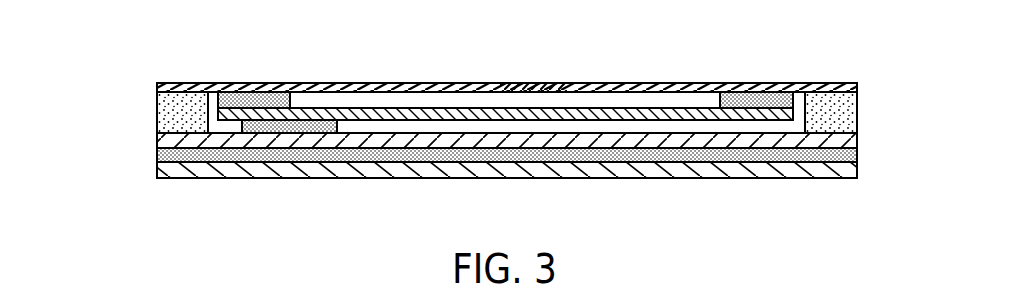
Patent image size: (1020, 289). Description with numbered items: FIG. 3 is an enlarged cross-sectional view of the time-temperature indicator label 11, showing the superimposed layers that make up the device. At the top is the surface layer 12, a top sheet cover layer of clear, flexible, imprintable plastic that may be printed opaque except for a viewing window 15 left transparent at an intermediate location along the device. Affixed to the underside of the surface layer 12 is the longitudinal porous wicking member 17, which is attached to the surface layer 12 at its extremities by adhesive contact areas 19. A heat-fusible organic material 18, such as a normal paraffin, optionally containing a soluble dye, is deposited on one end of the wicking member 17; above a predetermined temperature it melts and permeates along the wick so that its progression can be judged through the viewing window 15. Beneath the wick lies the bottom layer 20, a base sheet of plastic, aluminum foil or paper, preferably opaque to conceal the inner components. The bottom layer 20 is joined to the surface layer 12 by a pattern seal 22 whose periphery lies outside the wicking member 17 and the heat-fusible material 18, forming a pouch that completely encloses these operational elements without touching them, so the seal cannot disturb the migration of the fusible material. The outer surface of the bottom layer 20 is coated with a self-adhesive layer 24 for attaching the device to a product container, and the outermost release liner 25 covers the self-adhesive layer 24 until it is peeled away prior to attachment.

The label 11 is at (130, 132).
The surface layer 12 is at (663, 85).
The viewing window 15 is at (537, 83).
The wicking member 17 is at (412, 117).
The heat-fusible material 18 is at (290, 124).
The adhesive contact areas 19 is at (264, 98).
The bottom layer 20 is at (638, 138).
The pattern seal 22 is at (158, 103).
The self-adhesive layer 24 is at (795, 152).
The release liner 25 is at (205, 173).